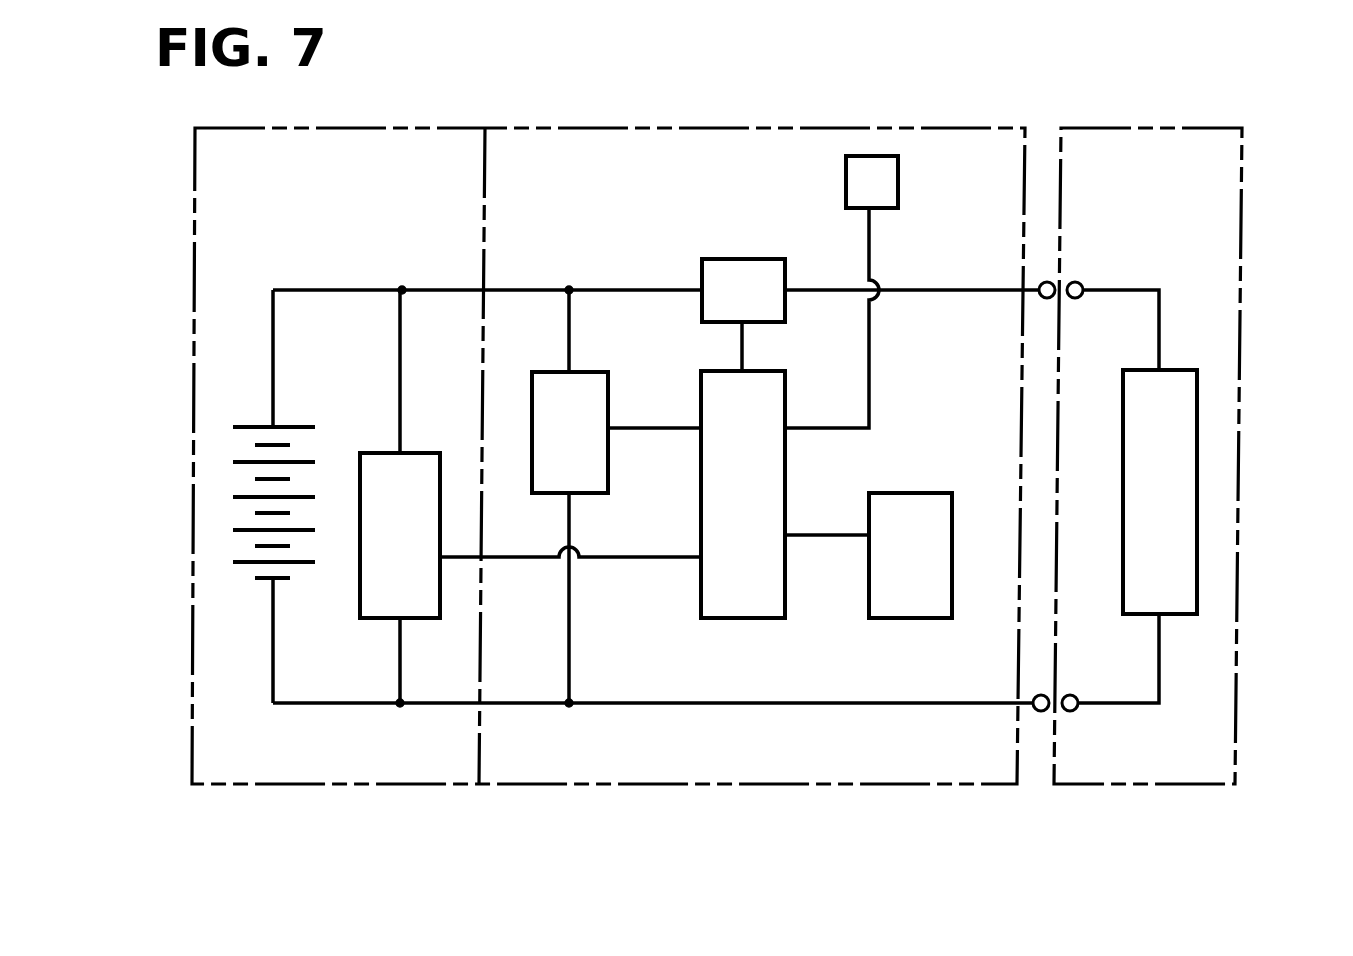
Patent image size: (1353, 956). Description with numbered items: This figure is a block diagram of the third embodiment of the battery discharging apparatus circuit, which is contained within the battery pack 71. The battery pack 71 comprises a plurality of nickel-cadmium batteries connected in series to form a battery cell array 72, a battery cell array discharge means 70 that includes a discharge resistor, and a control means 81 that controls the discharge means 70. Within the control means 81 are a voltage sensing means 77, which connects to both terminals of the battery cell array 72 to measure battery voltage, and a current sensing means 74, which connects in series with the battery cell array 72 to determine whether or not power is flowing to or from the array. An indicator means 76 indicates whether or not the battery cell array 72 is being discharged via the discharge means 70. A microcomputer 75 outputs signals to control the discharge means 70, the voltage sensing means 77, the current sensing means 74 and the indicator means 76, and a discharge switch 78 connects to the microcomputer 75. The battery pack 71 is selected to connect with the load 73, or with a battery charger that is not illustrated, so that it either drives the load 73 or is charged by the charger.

The battery cell array discharge means 70 is at (380, 606).
The battery pack 71 is at (557, 103).
The battery cell array 72 is at (240, 499).
The load 73 is at (1177, 563).
The current sensing means 74 is at (742, 268).
The microcomputer 75 is at (736, 612).
The indicator means 76 is at (912, 506).
The voltage sensing means 77 is at (549, 378).
The discharge switch 78 is at (862, 164).
The control means 81 is at (657, 787).